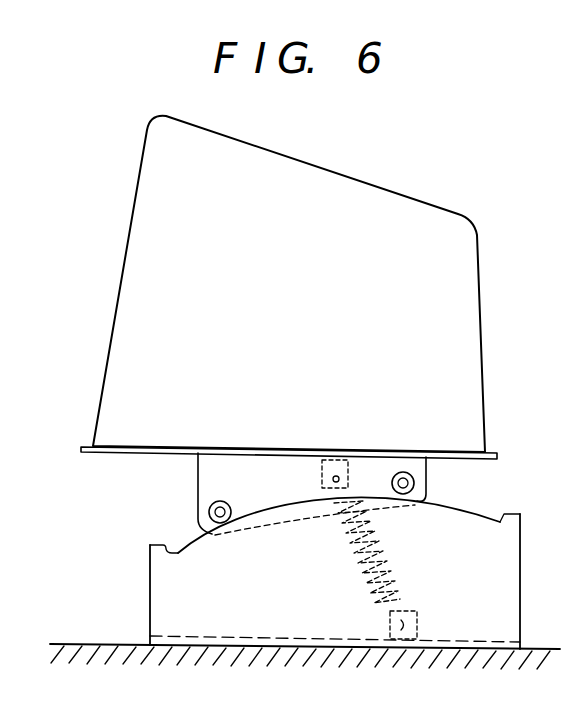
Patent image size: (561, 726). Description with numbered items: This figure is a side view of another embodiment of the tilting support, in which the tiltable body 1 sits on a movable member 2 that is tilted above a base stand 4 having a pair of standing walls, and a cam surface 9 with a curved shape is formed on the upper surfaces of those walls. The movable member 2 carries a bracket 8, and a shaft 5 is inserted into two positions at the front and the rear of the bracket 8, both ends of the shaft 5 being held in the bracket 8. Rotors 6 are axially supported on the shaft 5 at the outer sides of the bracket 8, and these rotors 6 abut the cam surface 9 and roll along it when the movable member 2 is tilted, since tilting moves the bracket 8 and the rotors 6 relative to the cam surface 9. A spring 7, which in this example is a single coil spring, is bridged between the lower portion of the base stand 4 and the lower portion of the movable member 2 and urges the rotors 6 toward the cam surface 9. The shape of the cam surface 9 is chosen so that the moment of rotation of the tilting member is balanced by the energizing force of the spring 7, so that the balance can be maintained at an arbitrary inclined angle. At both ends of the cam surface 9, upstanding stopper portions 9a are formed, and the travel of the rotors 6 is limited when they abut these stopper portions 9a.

The apparatus body 1 is at (140, 243).
The movable member 2 is at (84, 447).
The base stand 4 is at (514, 587).
The shaft 5 is at (219, 501).
The rotor 6 is at (229, 507).
The spring 7 is at (386, 553).
The bracket 8 is at (298, 467).
The cam surface 9 is at (440, 511).
The stopper portion 9a is at (176, 546).